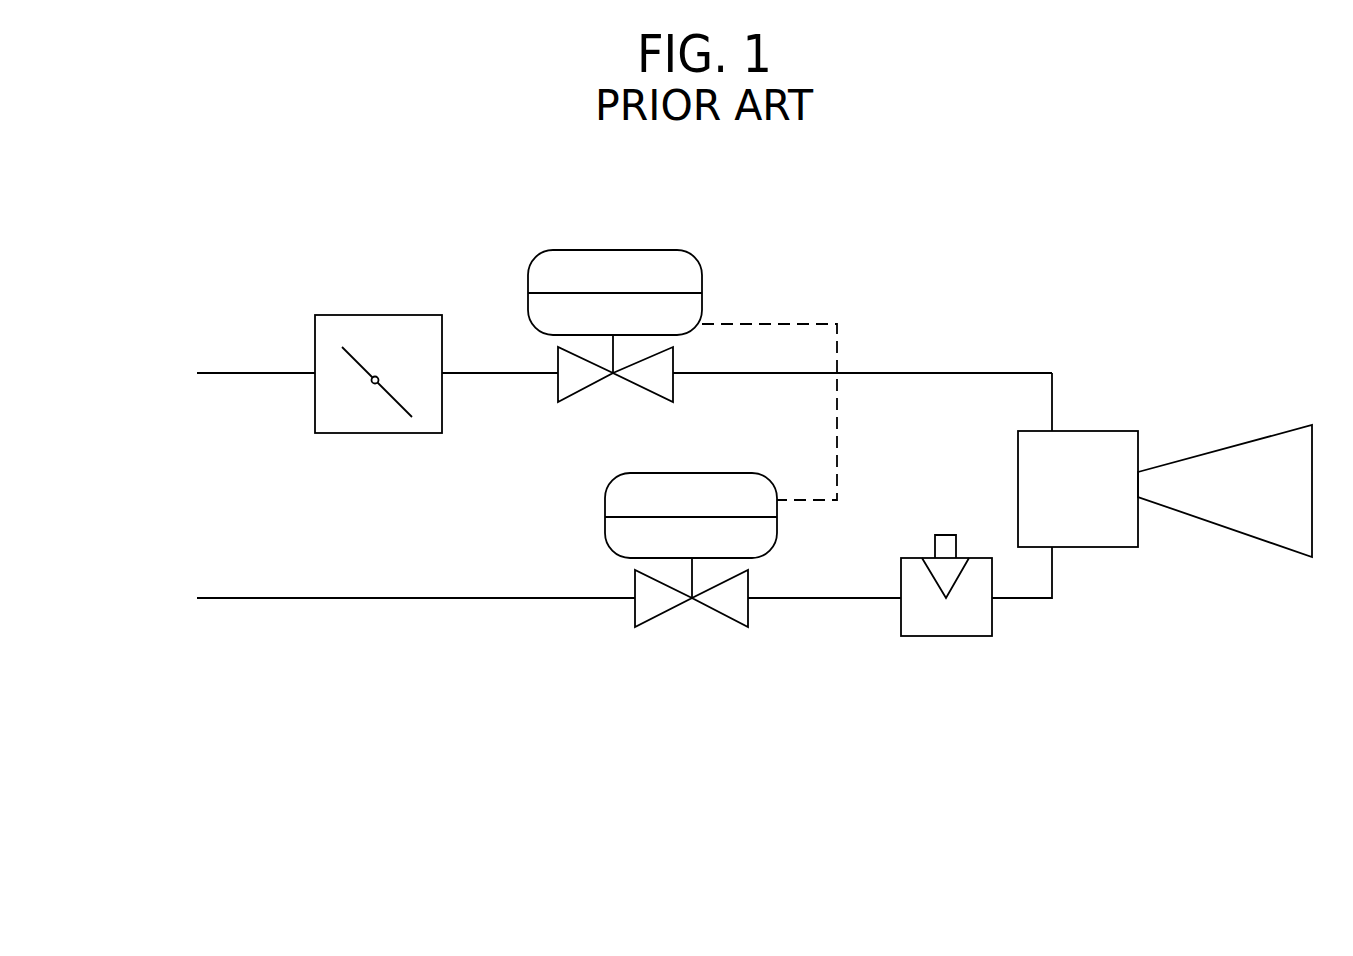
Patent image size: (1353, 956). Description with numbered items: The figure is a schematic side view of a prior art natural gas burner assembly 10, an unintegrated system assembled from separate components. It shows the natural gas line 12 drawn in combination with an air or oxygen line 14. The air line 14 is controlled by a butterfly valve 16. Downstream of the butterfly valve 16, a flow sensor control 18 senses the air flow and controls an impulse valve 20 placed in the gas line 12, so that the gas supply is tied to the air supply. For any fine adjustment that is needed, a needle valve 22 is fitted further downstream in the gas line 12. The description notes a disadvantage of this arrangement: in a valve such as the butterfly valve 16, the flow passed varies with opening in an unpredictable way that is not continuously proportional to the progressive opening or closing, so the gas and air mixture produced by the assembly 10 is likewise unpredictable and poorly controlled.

The natural gas burner assembly 10 is at (206, 186).
The natural gas line 12 is at (300, 599).
The air line 14 is at (247, 372).
The butterfly valve 16 is at (390, 327).
The flow sensor control 18 is at (662, 267).
The impulse valve 20 is at (617, 498).
The needle valve 22 is at (952, 627).